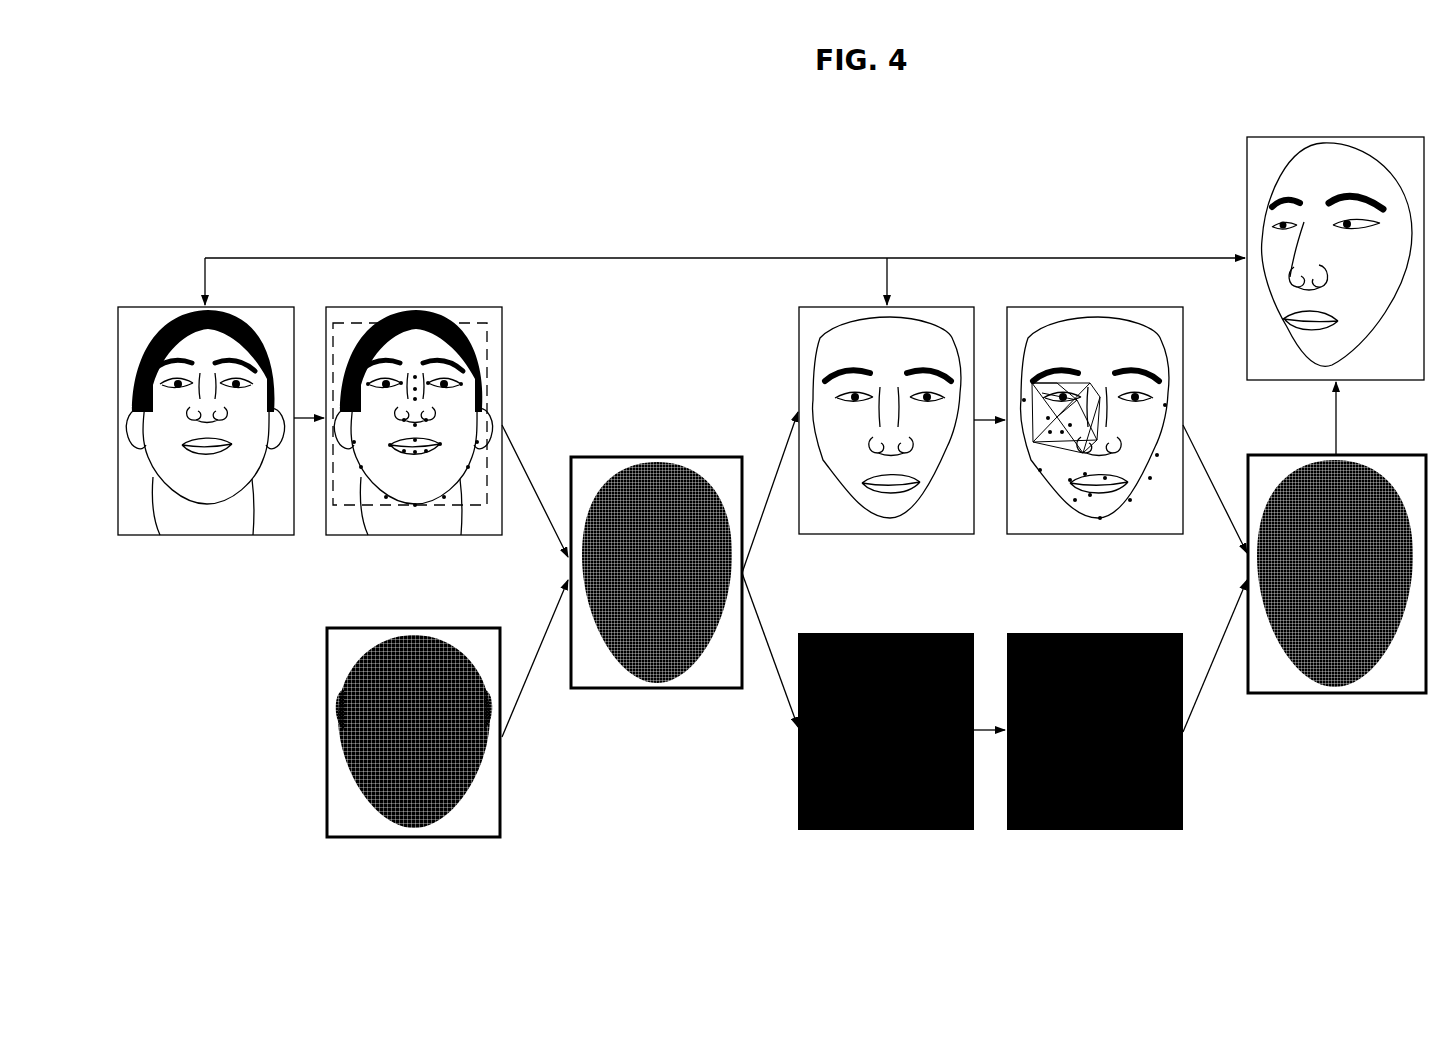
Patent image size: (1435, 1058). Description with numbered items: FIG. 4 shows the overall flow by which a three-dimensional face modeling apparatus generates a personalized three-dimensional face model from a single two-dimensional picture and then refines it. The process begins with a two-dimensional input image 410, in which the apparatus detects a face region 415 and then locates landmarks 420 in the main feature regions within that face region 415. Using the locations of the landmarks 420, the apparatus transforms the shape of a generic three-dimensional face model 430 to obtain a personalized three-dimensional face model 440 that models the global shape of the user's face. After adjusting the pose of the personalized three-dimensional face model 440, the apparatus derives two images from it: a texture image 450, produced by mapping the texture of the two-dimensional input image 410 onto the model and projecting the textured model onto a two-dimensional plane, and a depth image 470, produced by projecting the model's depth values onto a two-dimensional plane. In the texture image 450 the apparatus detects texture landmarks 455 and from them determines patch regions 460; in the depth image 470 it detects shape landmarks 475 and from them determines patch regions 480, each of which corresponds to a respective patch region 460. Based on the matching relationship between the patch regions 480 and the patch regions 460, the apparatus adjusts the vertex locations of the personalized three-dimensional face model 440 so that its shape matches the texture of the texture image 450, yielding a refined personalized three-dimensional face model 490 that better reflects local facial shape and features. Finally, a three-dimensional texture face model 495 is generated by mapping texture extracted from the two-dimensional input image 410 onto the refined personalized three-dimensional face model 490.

The 2D input image 410 is at (222, 307).
The face region 415 is at (383, 513).
The landmarks 420 is at (457, 387).
The generic 3D face model 430 is at (413, 628).
The personalized 3D face model 440 is at (655, 457).
The texture image 450 is at (907, 307).
The texture landmarks 455 is at (1033, 443).
The patch regions 460 is at (1048, 447).
The depth image 470 is at (890, 633).
The shape landmarks 475 is at (1035, 745).
The patch regions 480 is at (1047, 755).
The refined personalized 3D face model 490 is at (1350, 455).
The 3D texture face model 495 is at (1343, 137).